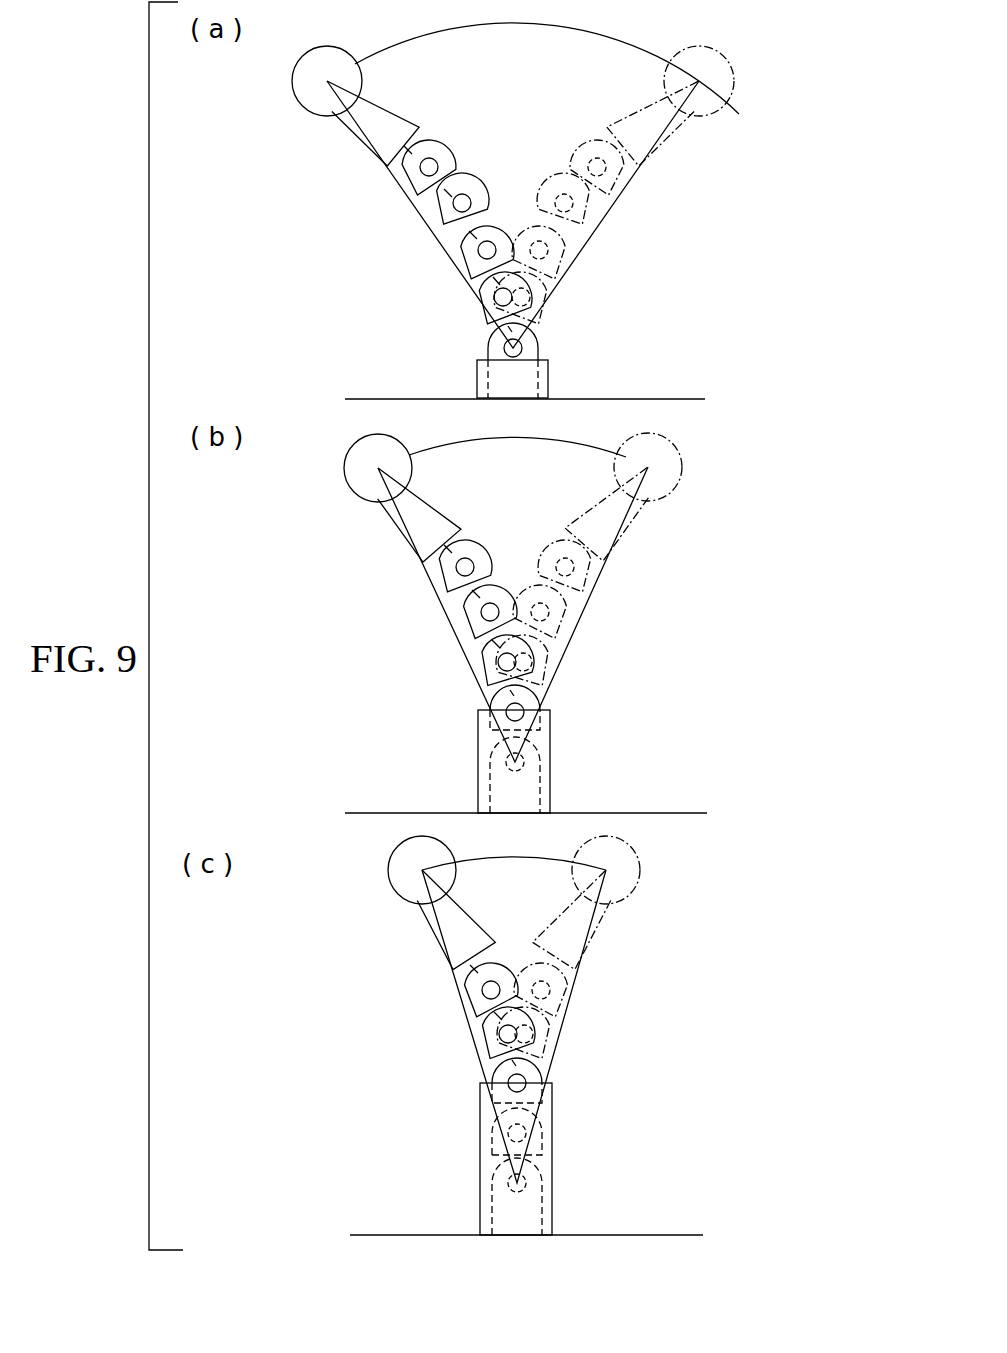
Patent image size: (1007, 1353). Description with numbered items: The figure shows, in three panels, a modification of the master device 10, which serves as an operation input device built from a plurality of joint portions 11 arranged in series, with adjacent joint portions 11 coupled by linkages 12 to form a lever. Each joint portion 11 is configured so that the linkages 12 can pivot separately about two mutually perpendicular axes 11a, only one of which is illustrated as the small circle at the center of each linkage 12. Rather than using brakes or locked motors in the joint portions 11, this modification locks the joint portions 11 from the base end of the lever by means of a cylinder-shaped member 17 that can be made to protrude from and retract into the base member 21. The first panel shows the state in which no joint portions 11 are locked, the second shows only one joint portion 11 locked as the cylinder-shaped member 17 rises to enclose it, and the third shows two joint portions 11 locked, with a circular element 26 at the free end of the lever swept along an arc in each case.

The master device 10 is at (775, 59).
The joint portion 11 is at (384, 182).
The axis 11a is at (437, 162).
The linkage 12 is at (392, 114).
The cylinder-shaped member 17 is at (548, 380).
The base member 21 is at (672, 398).
The end effector (hand) 26 is at (292, 82).